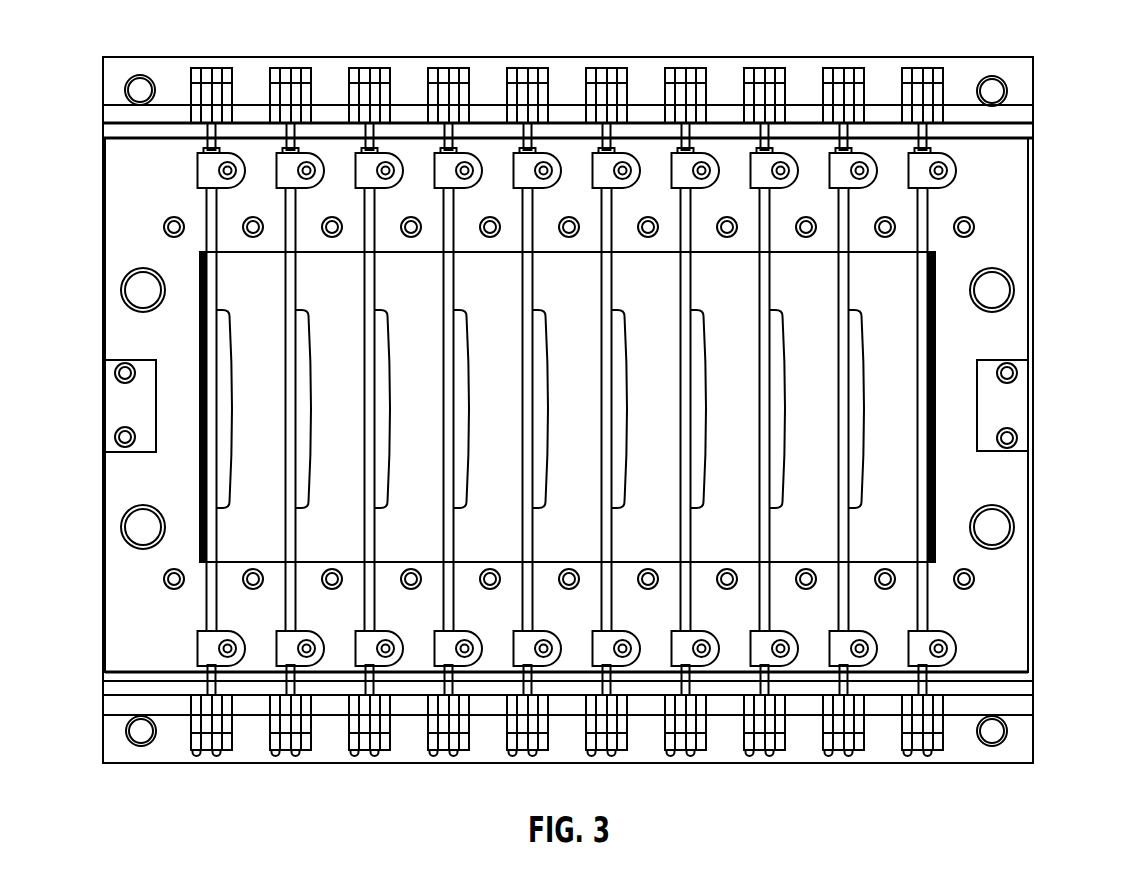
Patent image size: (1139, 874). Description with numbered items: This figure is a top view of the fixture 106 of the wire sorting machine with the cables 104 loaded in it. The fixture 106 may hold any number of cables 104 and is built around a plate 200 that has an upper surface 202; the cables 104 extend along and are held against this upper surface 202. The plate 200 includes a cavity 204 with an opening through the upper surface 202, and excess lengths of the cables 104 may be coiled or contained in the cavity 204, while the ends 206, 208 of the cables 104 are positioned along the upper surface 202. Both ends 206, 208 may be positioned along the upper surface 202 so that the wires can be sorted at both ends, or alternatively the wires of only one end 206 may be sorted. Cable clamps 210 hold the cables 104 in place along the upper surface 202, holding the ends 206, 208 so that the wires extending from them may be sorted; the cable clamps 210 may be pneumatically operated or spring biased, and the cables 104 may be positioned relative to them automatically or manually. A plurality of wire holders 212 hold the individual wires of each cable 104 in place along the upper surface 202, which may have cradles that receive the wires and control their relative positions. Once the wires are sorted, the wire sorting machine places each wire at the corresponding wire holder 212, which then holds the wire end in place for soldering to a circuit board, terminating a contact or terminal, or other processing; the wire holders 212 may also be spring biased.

The cable 104 is at (842, 326).
The fixture 106 is at (1003, 223).
The plate 200 is at (1001, 563).
The upper surface 202 is at (1002, 596).
The cavity 204 is at (887, 358).
The end 206 is at (940, 132).
The end 208 is at (930, 677).
The cable clamp 210 is at (953, 169).
The wire holder 212 is at (928, 77).